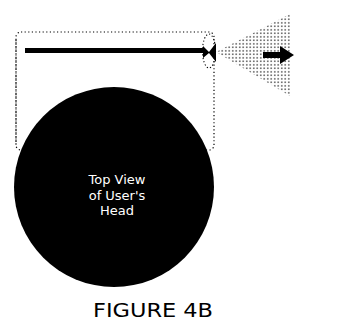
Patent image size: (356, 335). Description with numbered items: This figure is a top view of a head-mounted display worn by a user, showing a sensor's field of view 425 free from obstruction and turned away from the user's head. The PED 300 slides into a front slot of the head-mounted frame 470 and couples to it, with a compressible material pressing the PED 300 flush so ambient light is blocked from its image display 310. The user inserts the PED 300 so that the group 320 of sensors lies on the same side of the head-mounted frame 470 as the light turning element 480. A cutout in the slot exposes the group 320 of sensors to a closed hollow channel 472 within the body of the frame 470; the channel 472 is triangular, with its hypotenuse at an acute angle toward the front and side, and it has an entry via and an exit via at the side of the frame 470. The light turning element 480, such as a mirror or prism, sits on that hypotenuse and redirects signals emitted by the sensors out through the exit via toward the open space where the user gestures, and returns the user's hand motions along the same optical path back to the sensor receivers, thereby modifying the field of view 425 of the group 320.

The PED 300 is at (47, 31).
The image display 310 is at (104, 47).
The group of sensors 320 is at (206, 36).
The sensor's field of view 425 is at (257, 87).
The head-mounted frame 470 is at (20, 80).
The channel 472 is at (209, 63).
The light turning element 480 is at (201, 55).